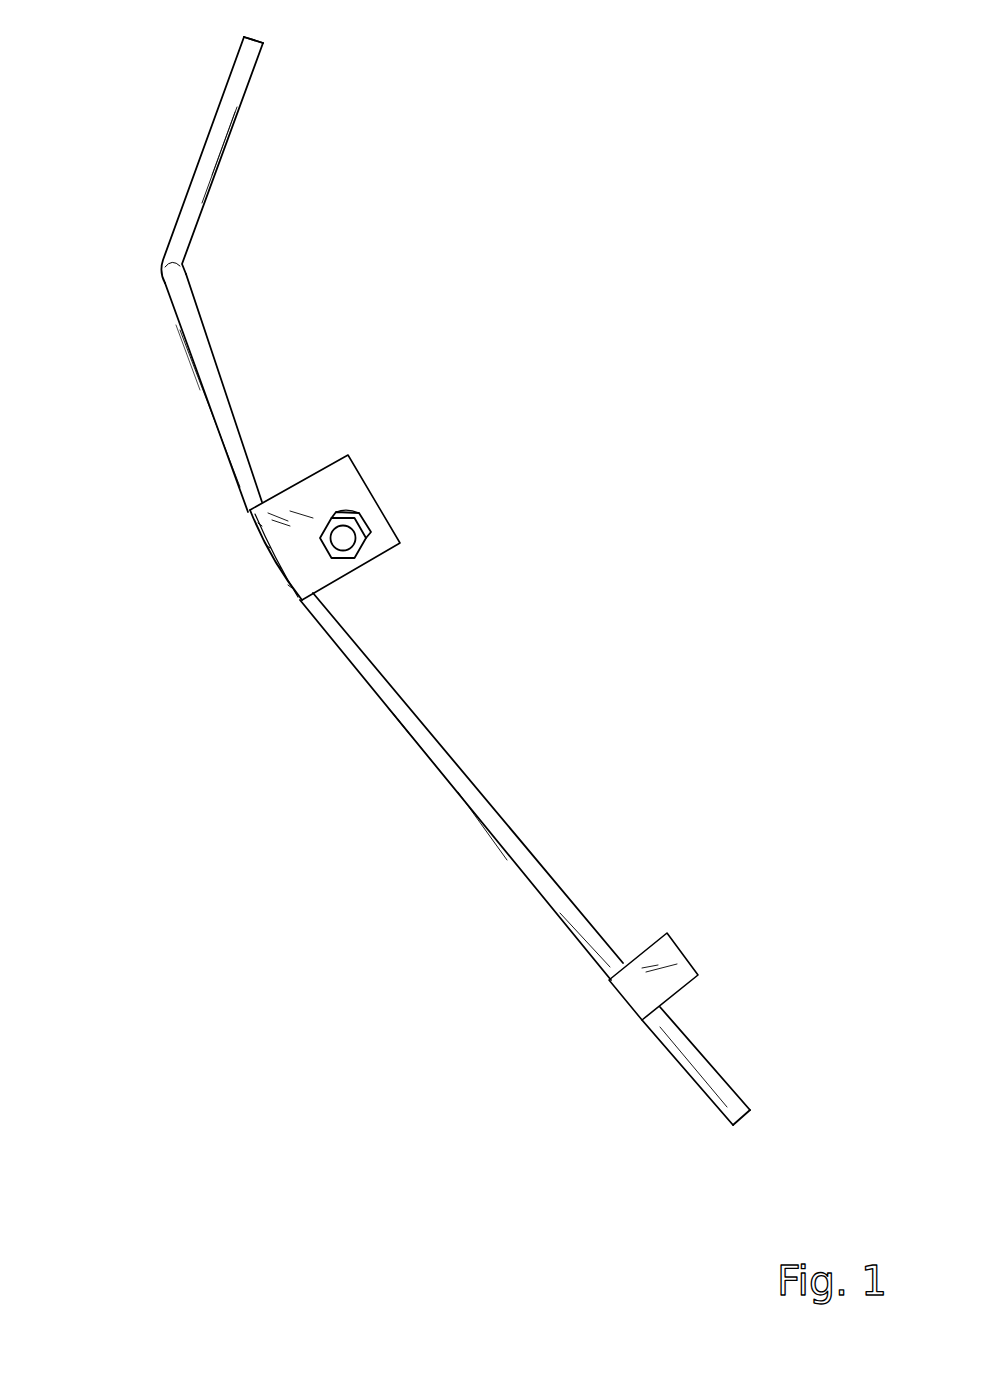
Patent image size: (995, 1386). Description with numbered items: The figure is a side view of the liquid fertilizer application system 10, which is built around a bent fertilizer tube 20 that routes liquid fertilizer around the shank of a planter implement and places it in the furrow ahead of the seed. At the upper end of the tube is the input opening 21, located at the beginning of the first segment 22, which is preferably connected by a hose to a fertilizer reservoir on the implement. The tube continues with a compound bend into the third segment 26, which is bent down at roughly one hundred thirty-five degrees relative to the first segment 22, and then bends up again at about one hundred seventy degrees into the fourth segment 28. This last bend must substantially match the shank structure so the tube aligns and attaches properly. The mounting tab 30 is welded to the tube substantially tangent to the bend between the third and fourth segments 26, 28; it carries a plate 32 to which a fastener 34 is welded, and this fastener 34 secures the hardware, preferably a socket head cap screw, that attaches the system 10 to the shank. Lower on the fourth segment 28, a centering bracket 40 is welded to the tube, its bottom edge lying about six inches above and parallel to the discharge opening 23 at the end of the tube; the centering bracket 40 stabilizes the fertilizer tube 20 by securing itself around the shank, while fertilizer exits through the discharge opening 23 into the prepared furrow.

The liquid fertilizer application system 10 is at (489, 566).
The fertilizer tube 20 is at (489, 566).
The input opening 21 is at (262, 42).
The first segment 22 is at (193, 192).
The discharge opening 23 is at (742, 1120).
The third segment 26 is at (210, 390).
The fourth segment 28 is at (390, 700).
The mounting tab 30 is at (429, 508).
The plate 32 is at (348, 483).
The fastener 34 is at (347, 557).
The centering bracket 40 is at (692, 956).